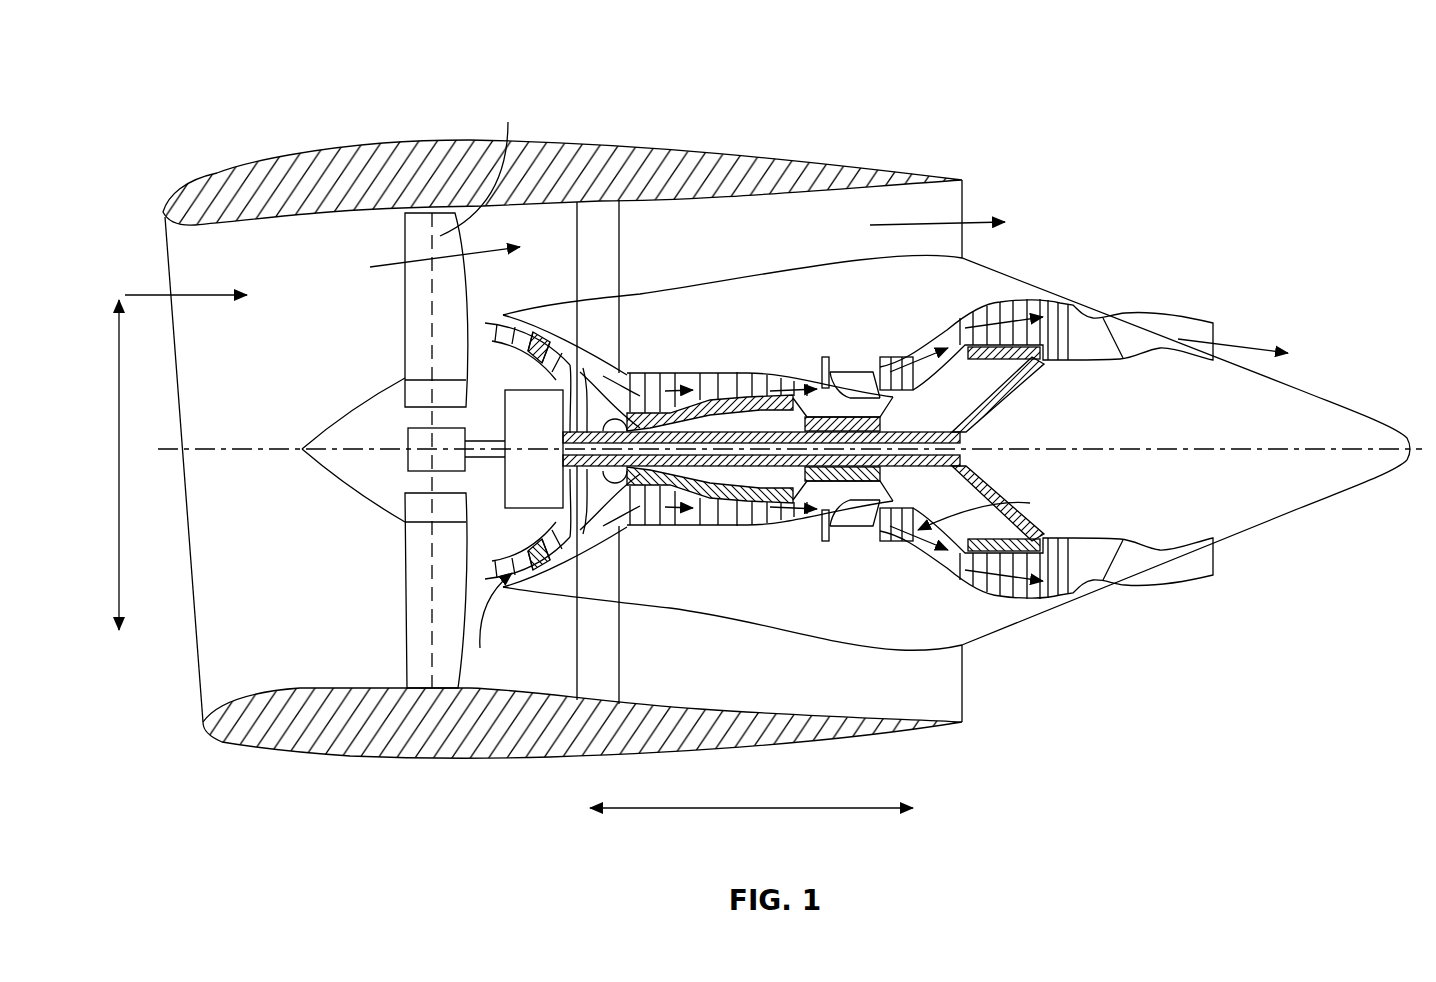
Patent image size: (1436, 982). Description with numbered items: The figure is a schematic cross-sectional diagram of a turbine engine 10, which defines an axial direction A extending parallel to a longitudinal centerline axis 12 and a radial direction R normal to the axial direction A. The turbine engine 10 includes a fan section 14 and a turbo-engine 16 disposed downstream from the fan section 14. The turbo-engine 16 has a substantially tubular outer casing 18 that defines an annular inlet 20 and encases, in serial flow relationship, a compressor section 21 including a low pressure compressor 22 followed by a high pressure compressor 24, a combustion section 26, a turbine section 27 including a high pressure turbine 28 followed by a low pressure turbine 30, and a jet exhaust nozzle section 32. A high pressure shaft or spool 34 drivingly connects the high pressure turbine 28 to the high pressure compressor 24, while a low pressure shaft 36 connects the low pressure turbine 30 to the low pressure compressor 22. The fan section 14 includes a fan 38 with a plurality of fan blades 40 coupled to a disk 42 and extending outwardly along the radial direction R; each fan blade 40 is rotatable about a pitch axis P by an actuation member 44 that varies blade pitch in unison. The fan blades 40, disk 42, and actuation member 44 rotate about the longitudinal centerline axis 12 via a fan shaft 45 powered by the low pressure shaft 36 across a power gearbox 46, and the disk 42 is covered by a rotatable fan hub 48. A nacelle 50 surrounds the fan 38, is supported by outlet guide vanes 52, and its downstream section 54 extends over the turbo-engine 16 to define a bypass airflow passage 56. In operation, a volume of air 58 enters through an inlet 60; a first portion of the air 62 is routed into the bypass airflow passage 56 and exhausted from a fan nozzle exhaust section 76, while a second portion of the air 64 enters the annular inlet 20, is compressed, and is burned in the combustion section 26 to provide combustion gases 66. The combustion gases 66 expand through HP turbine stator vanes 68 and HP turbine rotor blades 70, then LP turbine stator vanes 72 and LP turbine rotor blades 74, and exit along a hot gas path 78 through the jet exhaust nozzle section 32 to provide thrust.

The turbine engine 10 is at (1144, 140).
The longitudinal centerline axis 12 is at (1215, 440).
The fan section 14 is at (378, 229).
The turbo-engine 16 is at (834, 290).
The outer casing 18 is at (797, 636).
The annular inlet 20 is at (488, 625).
The compressor section 21 is at (701, 317).
The low pressure (LP) compressor 22 is at (575, 532).
The high pressure (HP) compressor 24 is at (652, 515).
The combustion section 26 is at (847, 522).
The turbine section 27 is at (945, 306).
The high pressure (HP) turbine 28 is at (993, 509).
The low pressure (LP) turbine 30 is at (1047, 604).
The jet exhaust nozzle section 32 is at (1126, 577).
The high pressure (HP) shaft or spool 34 is at (828, 408).
The low pressure (LP) shaft 36 is at (925, 430).
The fan 38 is at (348, 500).
The fan blades 40 is at (400, 597).
The disk 42 is at (420, 396).
The actuation member 44 is at (405, 440).
The fan shaft 45 is at (470, 440).
The power gearbox 46 is at (520, 389).
The rotatable fan hub 48 is at (345, 480).
The nacelle 50 is at (420, 760).
The outlet guide vanes 52 is at (622, 263).
The downstream section 54 is at (838, 161).
The bypass airflow passage 56 is at (848, 451).
The volume of air 58 is at (213, 293).
The inlet 60 is at (195, 650).
The first portion of the air 62 is at (385, 265).
The second portion of the air 64 is at (500, 316).
The combustion gases 66 is at (890, 360).
The HP turbine stator vanes 68 is at (855, 520).
The HP turbine rotor blades 70 is at (893, 510).
The LP turbine stator vanes 72 is at (969, 568).
The LP turbine rotor blades 74 is at (978, 580).
The fan nozzle exhaust section 76 is at (952, 208).
The hot gas path 78 is at (938, 347).
The pitch axis P is at (478, 163).
The radial direction R is at (117, 543).
The axial direction A is at (815, 808).